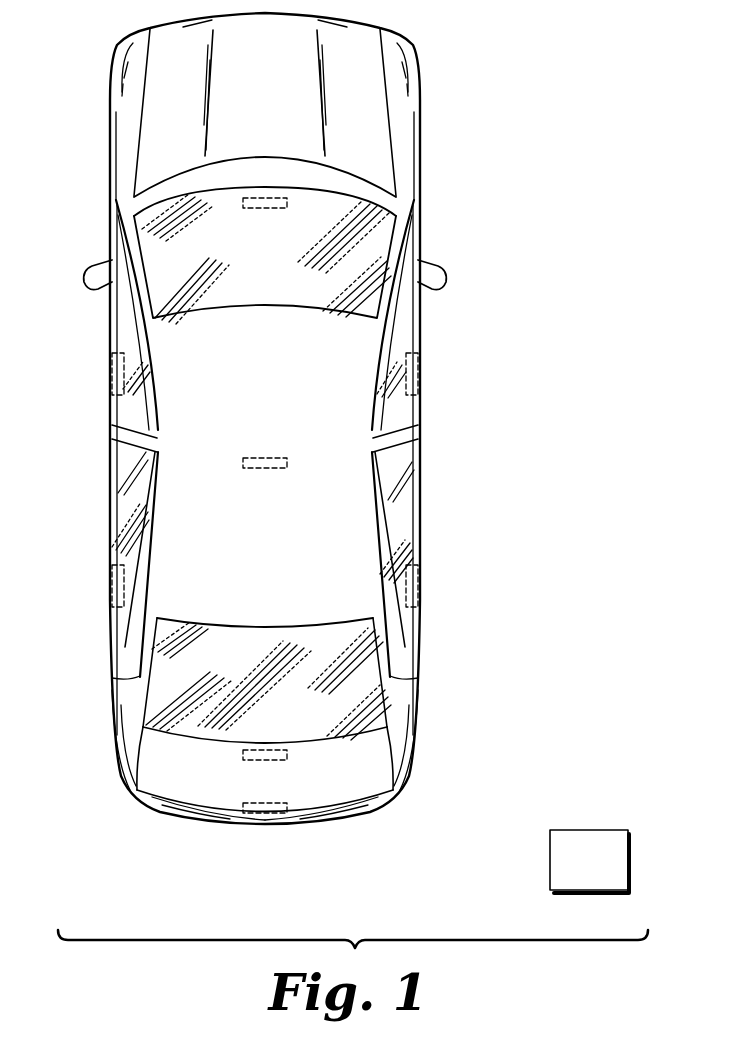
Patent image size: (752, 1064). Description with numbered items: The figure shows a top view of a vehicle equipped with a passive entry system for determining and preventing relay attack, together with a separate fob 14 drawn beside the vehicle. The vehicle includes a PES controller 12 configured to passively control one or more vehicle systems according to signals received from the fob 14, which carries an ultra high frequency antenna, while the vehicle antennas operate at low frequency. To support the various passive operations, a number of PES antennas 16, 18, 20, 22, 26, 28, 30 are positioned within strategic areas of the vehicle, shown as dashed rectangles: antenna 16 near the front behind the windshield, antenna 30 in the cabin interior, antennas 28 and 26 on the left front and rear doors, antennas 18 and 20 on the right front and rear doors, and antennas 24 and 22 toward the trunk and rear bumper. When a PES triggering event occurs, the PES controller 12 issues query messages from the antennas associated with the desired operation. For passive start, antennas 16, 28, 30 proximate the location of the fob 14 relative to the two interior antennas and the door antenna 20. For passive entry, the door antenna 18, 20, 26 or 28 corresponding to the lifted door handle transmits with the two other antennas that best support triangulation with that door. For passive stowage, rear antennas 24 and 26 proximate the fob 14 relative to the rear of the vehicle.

The PES controller 12 is at (254, 103).
The fob 14 is at (590, 830).
The PES antenna 16 is at (256, 212).
The PES antenna 18 is at (418, 374).
The PES antenna 20 is at (418, 586).
The PES antenna 22 is at (265, 816).
The antenna 24 is at (287, 753).
The PES antenna 26 is at (110, 588).
The PES antenna 28 is at (112, 378).
The PES antenna 30 is at (265, 458).